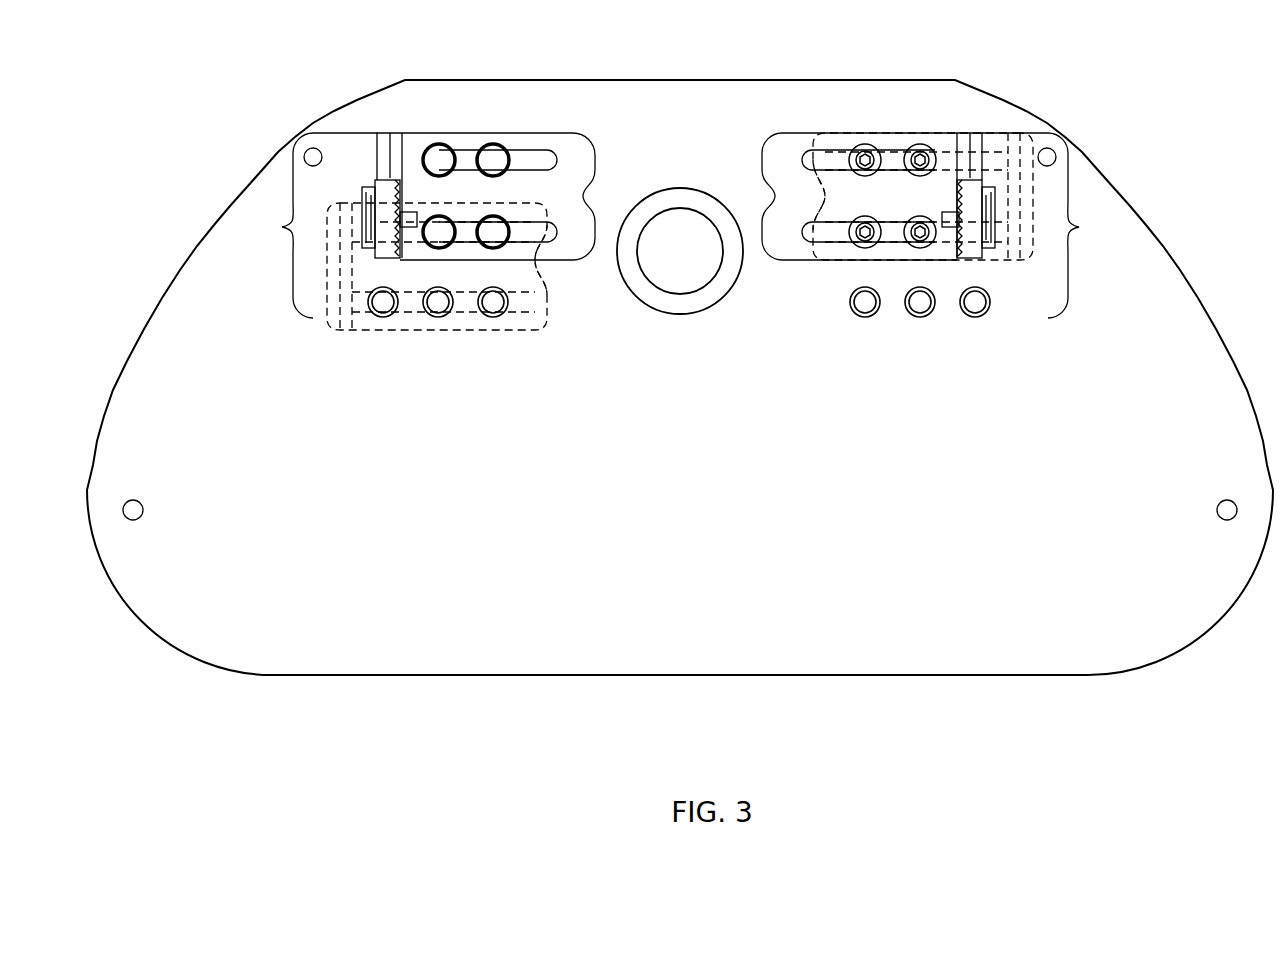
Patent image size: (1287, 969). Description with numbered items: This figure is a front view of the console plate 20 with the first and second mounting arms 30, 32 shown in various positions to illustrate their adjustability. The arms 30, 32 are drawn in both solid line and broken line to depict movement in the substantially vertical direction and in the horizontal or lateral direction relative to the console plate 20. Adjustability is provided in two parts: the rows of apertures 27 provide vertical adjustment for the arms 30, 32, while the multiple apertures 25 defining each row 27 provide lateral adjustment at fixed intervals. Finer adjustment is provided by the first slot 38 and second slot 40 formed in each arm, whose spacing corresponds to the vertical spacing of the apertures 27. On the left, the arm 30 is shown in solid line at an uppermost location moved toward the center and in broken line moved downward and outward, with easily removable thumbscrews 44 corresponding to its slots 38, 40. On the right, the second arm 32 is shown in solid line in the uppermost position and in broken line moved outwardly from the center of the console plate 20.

The console plate 20 is at (1118, 122).
The apertures 25 is at (383, 302).
The adjustment apertures 27 is at (283, 227).
The first mounting arm 30 is at (562, 120).
The second mounting arm 32 is at (807, 120).
The first slot 38 is at (558, 158).
The second slot 40 is at (572, 218).
The thumbscrews 44 is at (493, 232).